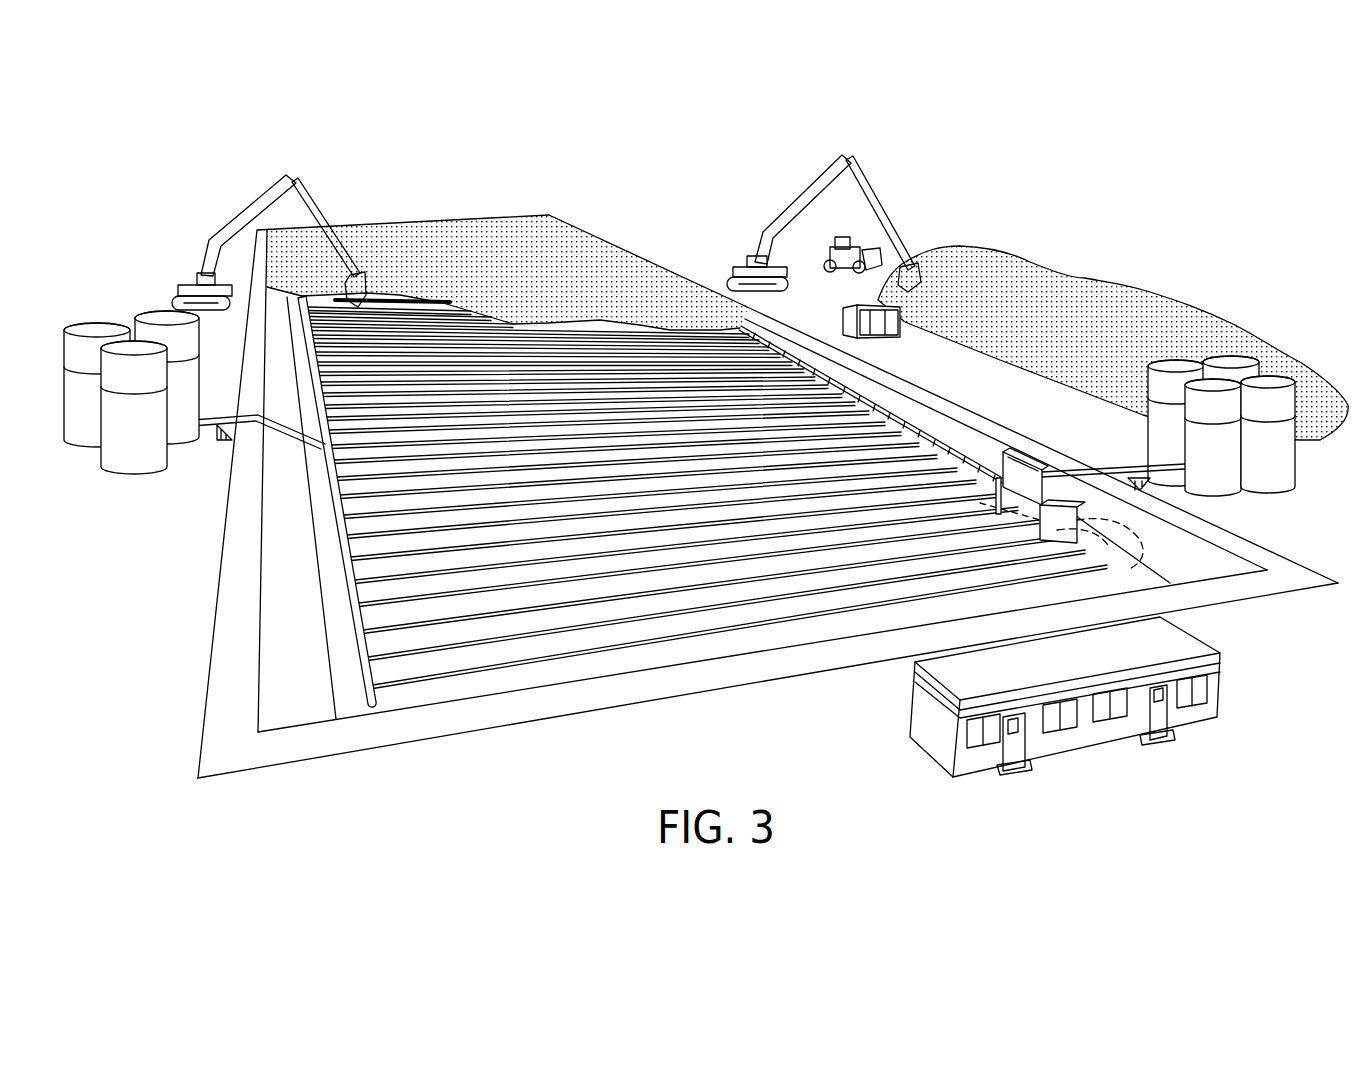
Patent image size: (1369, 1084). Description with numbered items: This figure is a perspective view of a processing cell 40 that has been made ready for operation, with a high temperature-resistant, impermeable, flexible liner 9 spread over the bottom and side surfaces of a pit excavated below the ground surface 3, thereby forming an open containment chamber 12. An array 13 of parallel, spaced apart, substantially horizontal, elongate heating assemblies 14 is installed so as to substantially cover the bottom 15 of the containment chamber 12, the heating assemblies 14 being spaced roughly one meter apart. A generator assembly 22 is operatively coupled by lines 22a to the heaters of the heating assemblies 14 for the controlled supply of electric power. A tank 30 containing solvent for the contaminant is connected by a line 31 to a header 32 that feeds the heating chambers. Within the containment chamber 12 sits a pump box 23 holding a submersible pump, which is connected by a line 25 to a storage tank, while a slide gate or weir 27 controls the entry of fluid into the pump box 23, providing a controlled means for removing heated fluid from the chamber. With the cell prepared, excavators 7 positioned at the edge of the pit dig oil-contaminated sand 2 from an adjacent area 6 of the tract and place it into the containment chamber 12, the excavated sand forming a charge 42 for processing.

The oil-contaminated sand 2 is at (1113, 327).
The ground surface 3 is at (797, 769).
The adjacent area 6 is at (1023, 406).
The excavator 7 is at (204, 258).
The liner 9 is at (612, 697).
The containment chamber 12 is at (643, 660).
The array of heating assemblies 13 is at (780, 602).
The heating assembly 14 is at (493, 668).
The bottom of the containment chamber 15 is at (398, 698).
The generator assembly 22 is at (893, 338).
The lines 22a is at (912, 420).
The pump box 23 is at (1145, 538).
The line 25 is at (1108, 468).
The slide gate or weir 27 is at (1017, 452).
The tank 30 is at (160, 322).
The line 31 is at (276, 422).
The header 32 is at (345, 597).
The processing cell 40 is at (208, 623).
The charge 42 is at (763, 316).